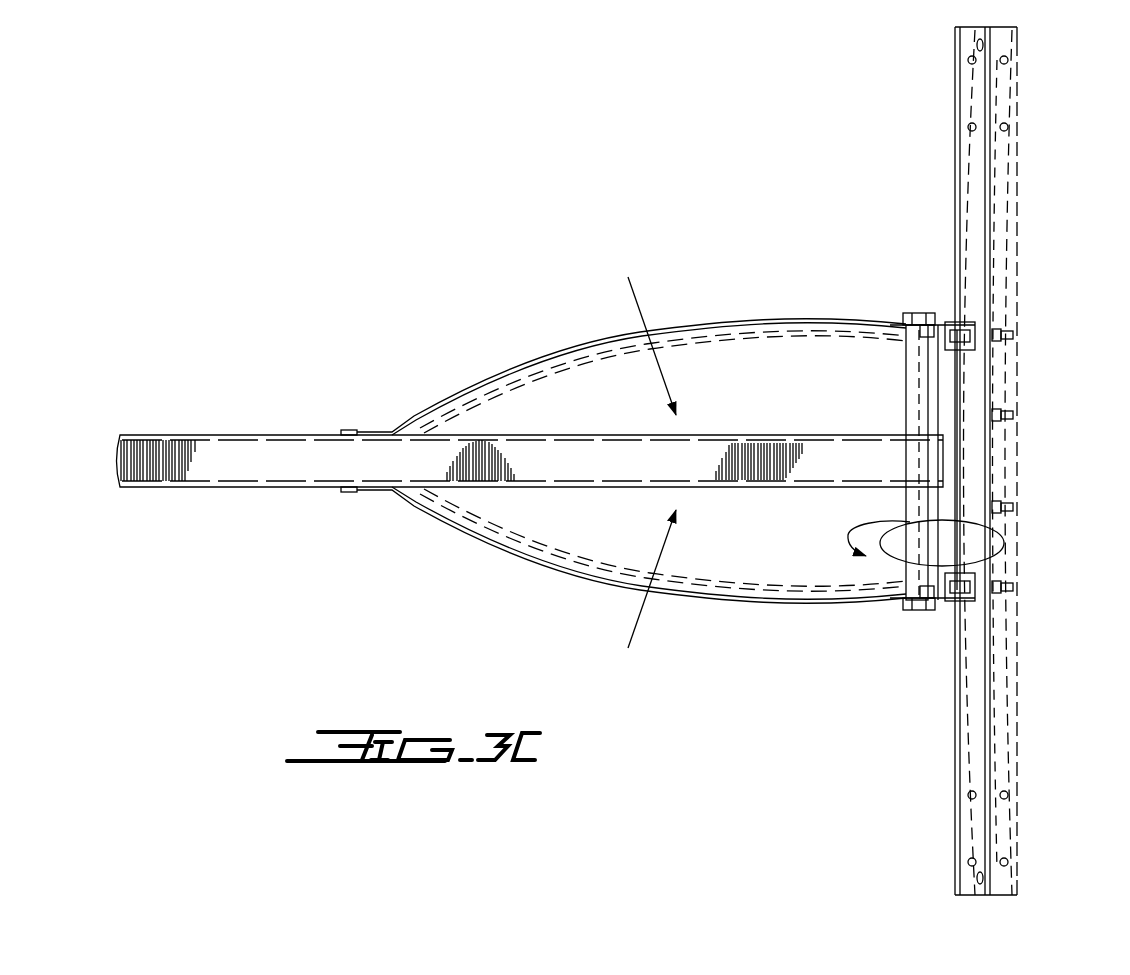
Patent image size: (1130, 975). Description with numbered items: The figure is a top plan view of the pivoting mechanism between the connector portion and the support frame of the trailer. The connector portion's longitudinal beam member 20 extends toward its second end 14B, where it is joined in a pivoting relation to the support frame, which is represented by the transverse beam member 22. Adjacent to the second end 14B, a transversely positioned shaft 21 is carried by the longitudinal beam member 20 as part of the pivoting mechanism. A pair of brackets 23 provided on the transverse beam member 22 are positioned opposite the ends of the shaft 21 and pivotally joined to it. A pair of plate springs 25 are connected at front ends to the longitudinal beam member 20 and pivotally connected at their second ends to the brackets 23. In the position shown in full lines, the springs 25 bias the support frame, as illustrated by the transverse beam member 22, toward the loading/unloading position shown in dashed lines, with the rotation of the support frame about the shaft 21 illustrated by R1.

The second end 14B is at (960, 447).
The longitudinal beam member 20 is at (208, 462).
The shaft 21 is at (920, 372).
The transverse beam member 22 is at (955, 107).
The brackets 23 is at (940, 322).
The springs 25 is at (582, 358).
The rotation R1 is at (848, 530).